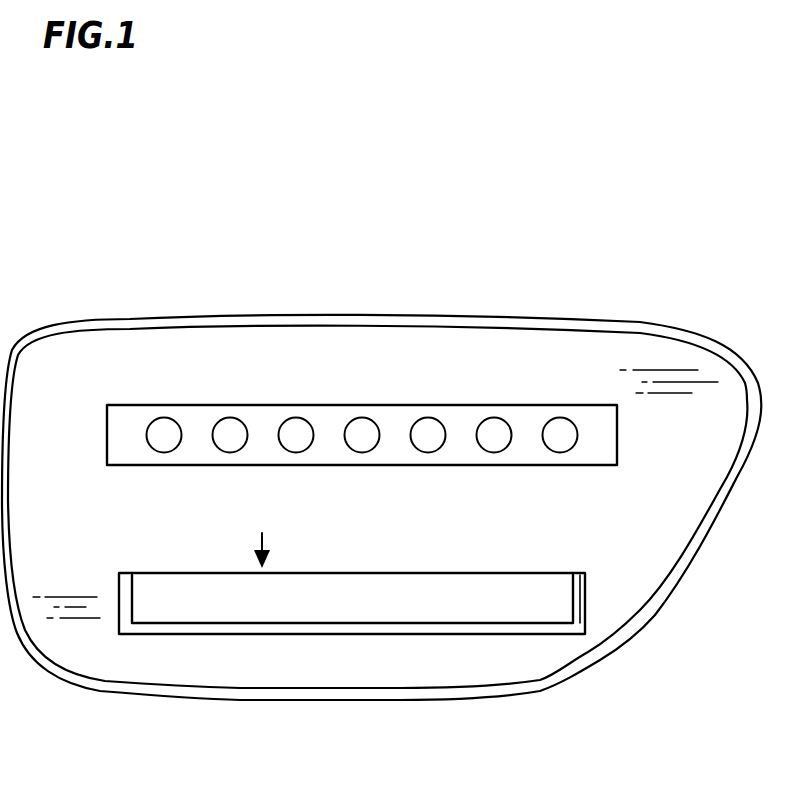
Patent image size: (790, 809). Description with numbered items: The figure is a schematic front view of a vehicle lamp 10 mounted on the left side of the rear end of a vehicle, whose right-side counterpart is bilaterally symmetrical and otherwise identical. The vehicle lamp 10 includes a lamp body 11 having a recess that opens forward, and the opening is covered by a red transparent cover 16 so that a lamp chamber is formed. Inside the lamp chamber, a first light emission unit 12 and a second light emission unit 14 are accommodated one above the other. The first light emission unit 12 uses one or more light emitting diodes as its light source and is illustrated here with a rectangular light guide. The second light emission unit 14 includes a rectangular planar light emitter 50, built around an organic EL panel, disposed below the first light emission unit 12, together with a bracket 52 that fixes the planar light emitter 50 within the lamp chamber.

The vehicle lamp 10 is at (381, 498).
The lamp body 11 is at (449, 322).
The first light emission unit 12 is at (195, 423).
The second light emission unit 14 is at (356, 636).
The red transparent cover 16 is at (660, 543).
The planar light emitter 50 is at (388, 590).
The bracket 52 is at (578, 628).